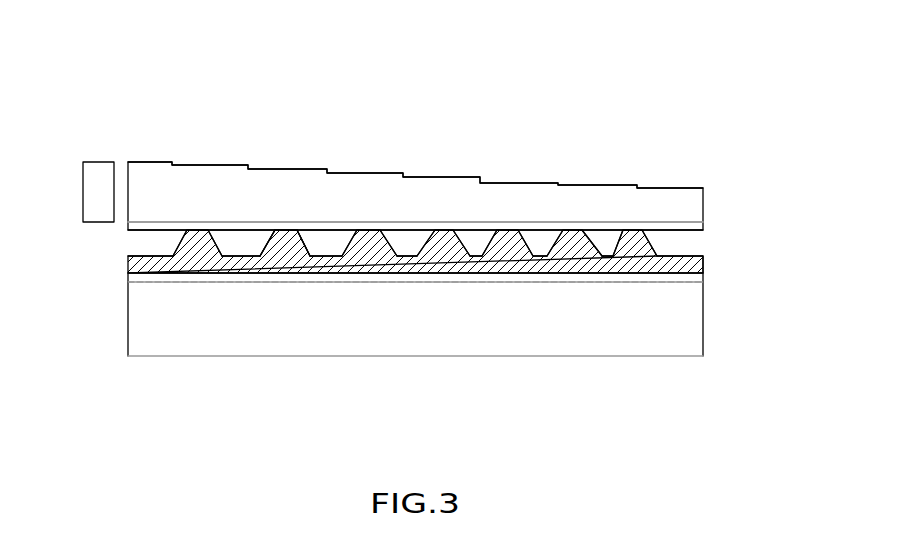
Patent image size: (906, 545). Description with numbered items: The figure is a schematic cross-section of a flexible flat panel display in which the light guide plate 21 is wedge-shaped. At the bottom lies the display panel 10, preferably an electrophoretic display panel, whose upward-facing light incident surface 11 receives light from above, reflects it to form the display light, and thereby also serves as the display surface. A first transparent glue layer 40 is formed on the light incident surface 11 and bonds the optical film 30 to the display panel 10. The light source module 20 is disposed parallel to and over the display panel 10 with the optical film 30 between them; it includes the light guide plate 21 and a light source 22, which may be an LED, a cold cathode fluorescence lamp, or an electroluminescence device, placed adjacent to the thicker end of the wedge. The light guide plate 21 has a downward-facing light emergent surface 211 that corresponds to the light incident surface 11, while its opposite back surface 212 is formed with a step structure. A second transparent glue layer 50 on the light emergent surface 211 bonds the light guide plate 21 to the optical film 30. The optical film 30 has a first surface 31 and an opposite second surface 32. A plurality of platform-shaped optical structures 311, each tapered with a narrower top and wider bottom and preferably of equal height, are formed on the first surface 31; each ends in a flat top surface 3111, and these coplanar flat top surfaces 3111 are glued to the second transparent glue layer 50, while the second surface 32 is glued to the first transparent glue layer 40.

The display panel 10 is at (333, 345).
The light incident surface 11 is at (153, 282).
The light source module 20 is at (175, 62).
The light guide plate 21 is at (208, 177).
The light source 22 is at (83, 192).
The light emergent surface 211 is at (422, 222).
The back surface 212 is at (603, 185).
The optical film 30 is at (702, 262).
The first surface 31 is at (483, 254).
The platform-shaped optical structure 311 is at (290, 243).
The flat top surface 3111 is at (312, 236).
The second surface 32 is at (465, 272).
The first transparent glue layer 40 is at (128, 277).
The second transparent glue layer 50 is at (700, 227).